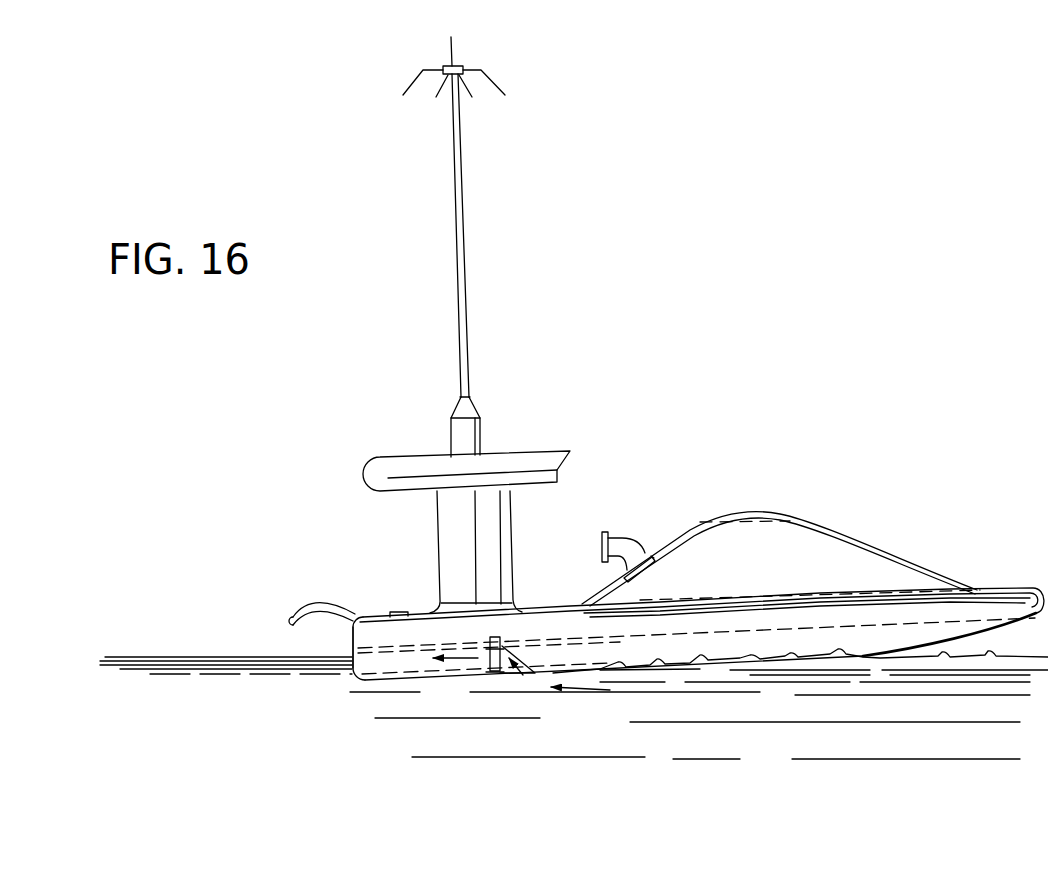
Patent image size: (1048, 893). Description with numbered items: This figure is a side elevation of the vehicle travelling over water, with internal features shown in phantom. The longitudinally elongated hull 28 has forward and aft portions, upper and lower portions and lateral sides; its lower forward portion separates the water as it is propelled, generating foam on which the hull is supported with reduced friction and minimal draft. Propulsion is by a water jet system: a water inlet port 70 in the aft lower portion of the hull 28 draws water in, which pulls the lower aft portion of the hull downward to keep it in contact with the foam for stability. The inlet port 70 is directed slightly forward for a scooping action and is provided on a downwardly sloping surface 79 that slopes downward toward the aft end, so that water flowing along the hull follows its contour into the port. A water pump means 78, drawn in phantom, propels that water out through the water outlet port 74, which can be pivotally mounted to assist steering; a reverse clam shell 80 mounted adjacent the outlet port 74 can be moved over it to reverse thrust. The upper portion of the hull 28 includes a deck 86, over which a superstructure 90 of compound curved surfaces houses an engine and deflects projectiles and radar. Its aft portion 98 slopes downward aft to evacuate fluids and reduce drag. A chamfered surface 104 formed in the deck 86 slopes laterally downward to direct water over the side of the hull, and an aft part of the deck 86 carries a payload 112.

The hull 28 is at (1025, 585).
The water inlet port 70 is at (521, 682).
The water outlet port 74 is at (352, 662).
The water pump means 78 is at (486, 665).
The downwardly sloping surface 79 is at (499, 678).
The reverse clam shell 80 is at (322, 604).
The deck 86 is at (548, 608).
The superstructure 90 is at (822, 523).
The aft portion of the superstructure 98 is at (672, 540).
The chamfered surface 104 is at (913, 600).
The payload 112 is at (402, 456).